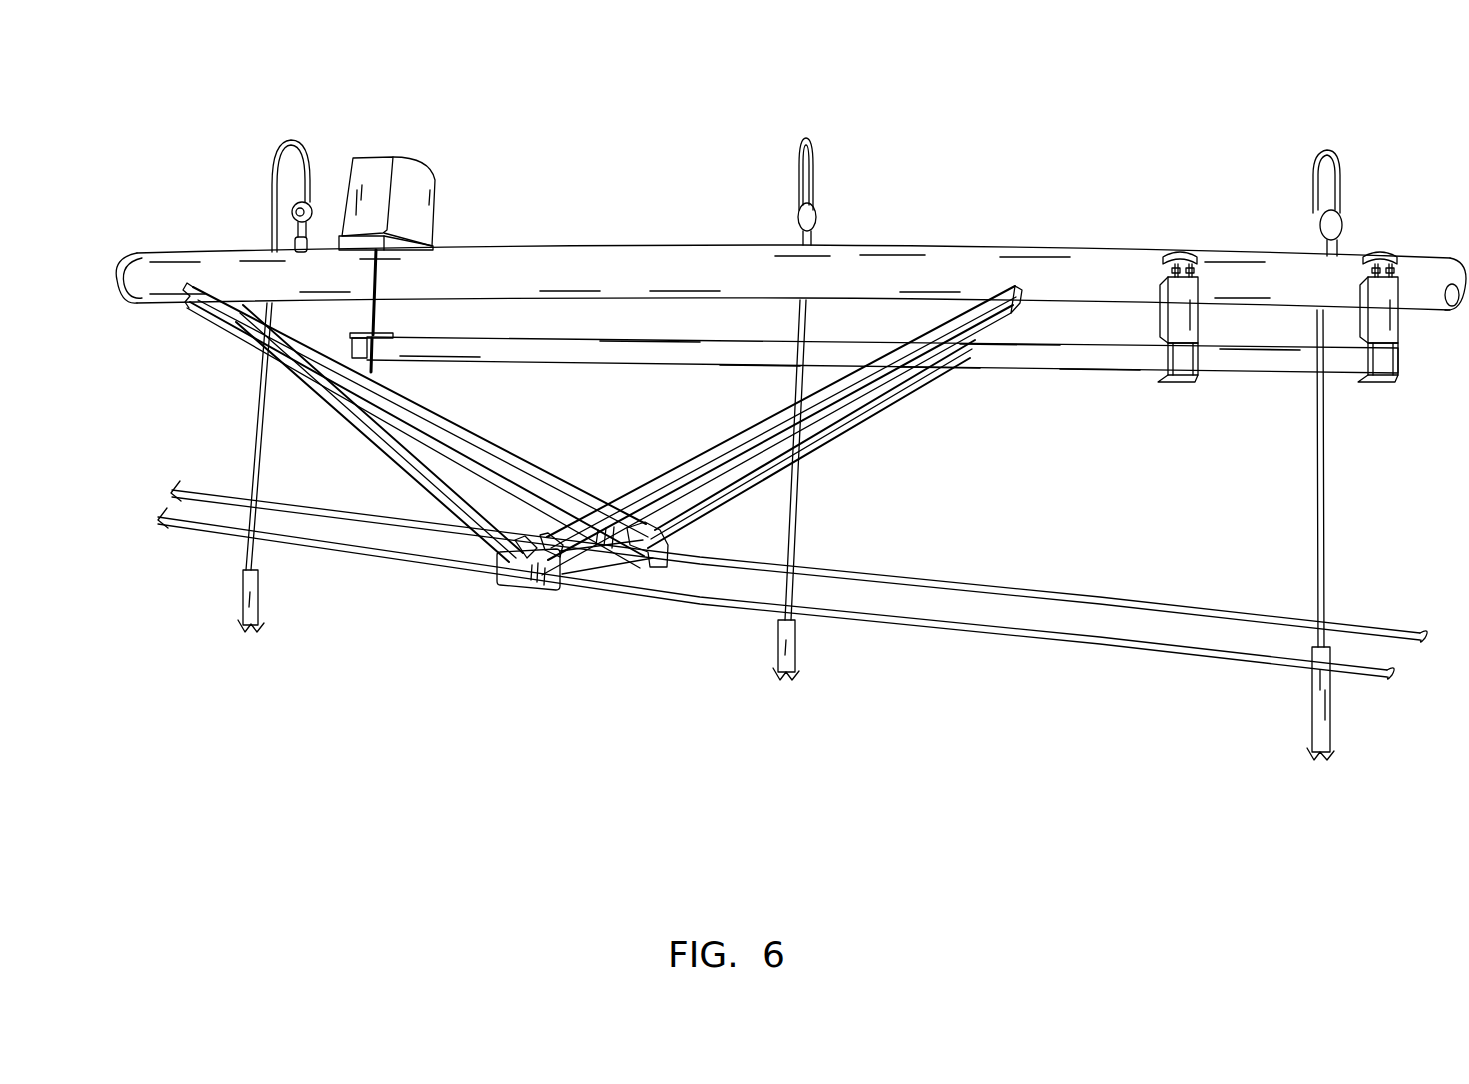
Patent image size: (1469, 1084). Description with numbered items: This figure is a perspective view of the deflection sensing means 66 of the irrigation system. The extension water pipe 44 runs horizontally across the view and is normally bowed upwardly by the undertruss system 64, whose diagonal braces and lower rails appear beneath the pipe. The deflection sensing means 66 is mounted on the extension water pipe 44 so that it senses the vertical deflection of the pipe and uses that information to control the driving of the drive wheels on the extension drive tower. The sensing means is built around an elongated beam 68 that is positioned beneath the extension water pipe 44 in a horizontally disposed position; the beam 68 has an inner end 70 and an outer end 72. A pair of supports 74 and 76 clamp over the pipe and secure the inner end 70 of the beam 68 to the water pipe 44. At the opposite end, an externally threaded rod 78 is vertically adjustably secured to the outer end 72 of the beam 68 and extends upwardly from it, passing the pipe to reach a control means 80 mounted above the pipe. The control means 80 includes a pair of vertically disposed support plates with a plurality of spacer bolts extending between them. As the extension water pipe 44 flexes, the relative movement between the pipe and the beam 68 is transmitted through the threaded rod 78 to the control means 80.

The extension water pipe 44 is at (870, 268).
The undertruss system 64 is at (1118, 649).
The deflection sensing means 66 is at (1126, 396).
The elongated beam 68 is at (635, 365).
The inner end 70 is at (1402, 362).
The outer end 72 is at (350, 343).
The support 74 is at (1398, 312).
The support 76 is at (1185, 302).
The externally threaded rod 78 is at (377, 268).
The control means 80 is at (441, 162).